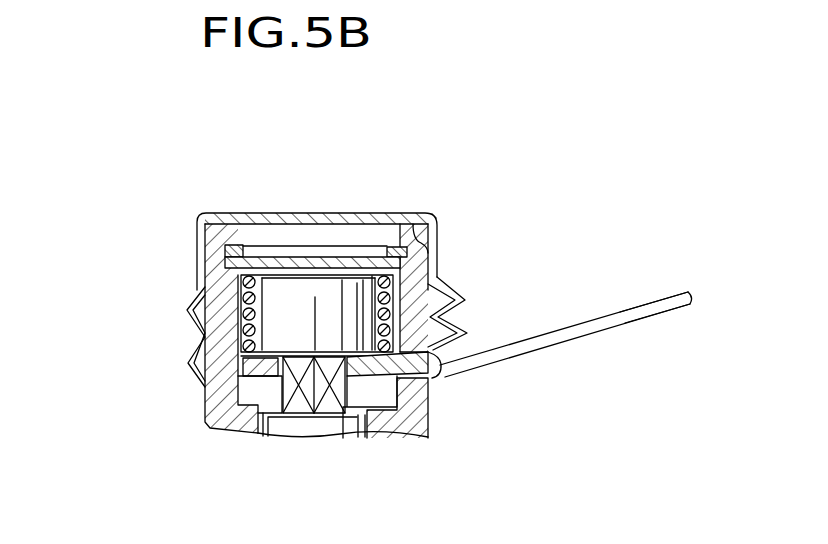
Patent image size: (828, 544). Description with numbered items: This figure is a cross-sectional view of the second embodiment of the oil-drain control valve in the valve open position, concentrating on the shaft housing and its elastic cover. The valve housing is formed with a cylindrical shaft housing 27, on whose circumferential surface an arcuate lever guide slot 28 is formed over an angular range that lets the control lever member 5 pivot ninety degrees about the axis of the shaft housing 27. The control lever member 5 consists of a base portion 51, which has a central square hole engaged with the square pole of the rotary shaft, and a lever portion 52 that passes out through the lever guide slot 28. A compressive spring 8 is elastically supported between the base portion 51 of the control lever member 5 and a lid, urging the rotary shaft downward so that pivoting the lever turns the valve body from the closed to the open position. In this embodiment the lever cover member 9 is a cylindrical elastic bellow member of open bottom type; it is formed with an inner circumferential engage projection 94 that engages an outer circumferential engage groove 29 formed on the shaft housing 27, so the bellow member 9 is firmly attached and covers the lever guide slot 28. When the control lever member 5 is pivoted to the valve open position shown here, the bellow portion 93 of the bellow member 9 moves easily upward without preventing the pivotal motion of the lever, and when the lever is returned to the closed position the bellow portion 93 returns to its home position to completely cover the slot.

The control lever member 5 is at (614, 300).
The lever portion 52 is at (634, 320).
The spring 8 is at (238, 322).
The lever cover member 9 is at (313, 205).
The cylindrical shaft housing 27 is at (250, 403).
The lever guide slot 28 is at (430, 377).
The engage groove 29 is at (430, 245).
The base portion 51 is at (383, 440).
The bellow portion 93 is at (188, 368).
The engage projection 94 is at (223, 240).